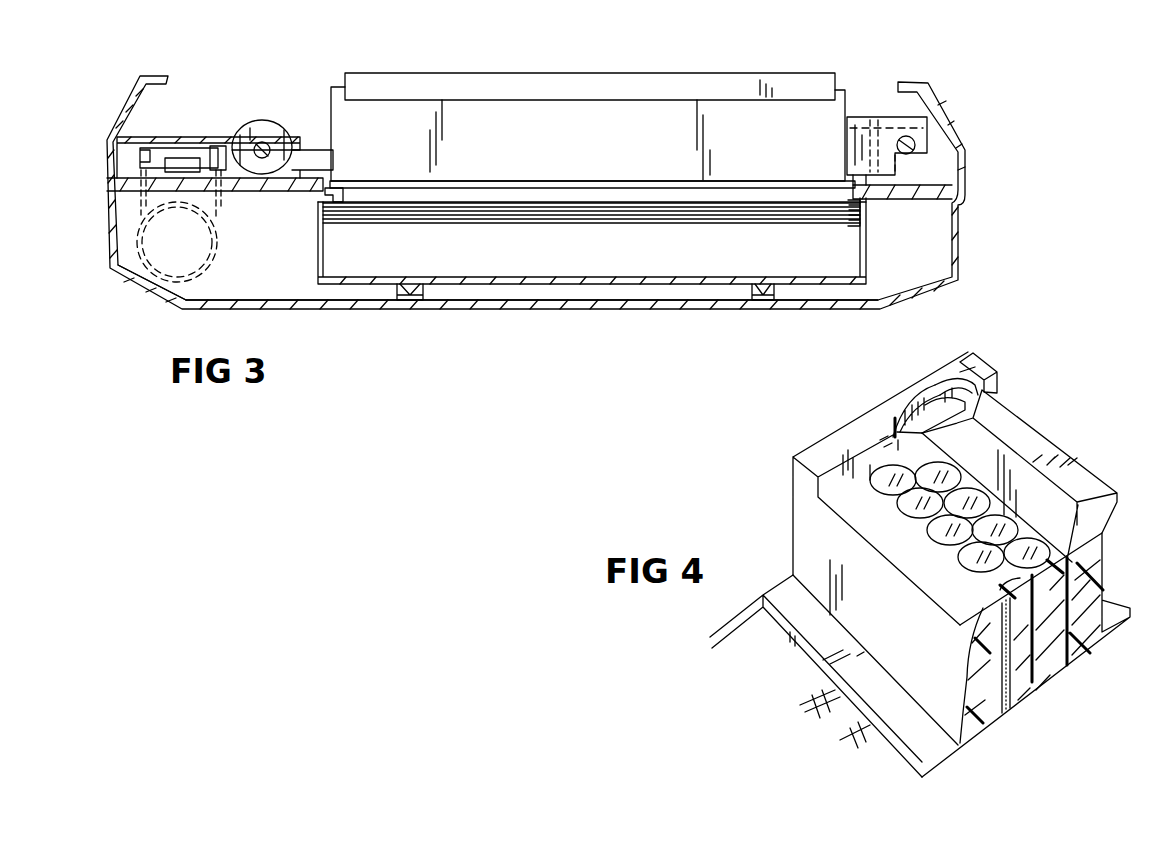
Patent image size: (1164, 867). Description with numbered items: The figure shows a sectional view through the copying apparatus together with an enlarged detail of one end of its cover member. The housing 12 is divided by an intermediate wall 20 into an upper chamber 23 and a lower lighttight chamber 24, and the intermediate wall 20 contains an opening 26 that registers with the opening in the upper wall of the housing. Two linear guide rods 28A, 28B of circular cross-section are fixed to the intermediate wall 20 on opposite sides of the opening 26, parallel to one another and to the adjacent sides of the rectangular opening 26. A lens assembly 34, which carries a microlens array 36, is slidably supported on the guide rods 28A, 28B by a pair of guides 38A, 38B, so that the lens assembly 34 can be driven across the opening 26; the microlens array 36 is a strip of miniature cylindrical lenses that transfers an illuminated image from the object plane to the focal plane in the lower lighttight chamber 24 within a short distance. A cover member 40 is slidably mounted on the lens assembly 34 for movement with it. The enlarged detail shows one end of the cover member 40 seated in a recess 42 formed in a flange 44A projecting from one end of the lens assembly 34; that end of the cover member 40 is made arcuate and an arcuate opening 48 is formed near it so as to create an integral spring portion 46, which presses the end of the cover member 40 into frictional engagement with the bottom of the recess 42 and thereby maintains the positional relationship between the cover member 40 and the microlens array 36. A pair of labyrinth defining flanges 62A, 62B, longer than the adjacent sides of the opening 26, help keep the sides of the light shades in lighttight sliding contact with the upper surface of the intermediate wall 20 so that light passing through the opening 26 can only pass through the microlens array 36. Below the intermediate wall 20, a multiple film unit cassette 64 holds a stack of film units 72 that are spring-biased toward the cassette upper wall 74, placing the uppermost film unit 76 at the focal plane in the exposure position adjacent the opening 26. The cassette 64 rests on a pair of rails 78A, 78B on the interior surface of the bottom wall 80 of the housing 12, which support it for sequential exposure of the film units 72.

In FIG. 3, the housing 12 is at (122, 118).
In FIG. 3, the intermediate wall 20 is at (147, 200).
In FIG. 3, the upper chamber 23 is at (200, 112).
In FIG. 3, the lower lighttight chamber 24 is at (252, 286).
In FIG. 3, the opening 26 is at (705, 195).
In FIG. 3, the linear guide rod 28A is at (255, 130).
In FIG. 3, the linear guide rod 28B is at (916, 145).
In FIG. 3, the lens assembly 34 is at (635, 115).
In FIG. 4, the lens assembly 34 is at (793, 545).
In FIG. 4, the microlens array 36 is at (1062, 565).
In FIG. 3, the guide 38A is at (268, 122).
In FIG. 3, the guide 38B is at (883, 117).
In FIG. 3, the cover member 40 is at (712, 85).
In FIG. 4, the cover member 40 is at (1007, 418).
In FIG. 4, the recess 42 is at (870, 440).
In FIG. 4, the flange 44A is at (975, 367).
In FIG. 4, the integral spring portion 46 is at (967, 385).
In FIG. 4, the arcuate opening 48 is at (912, 400).
In FIG. 3, the labyrinth defining flange 62A is at (312, 165).
In FIG. 3, the labyrinth defining flange 62B is at (864, 175).
In FIG. 3, the multiple film unit cassette 64 is at (320, 240).
In FIG. 3, the film units 72 is at (622, 190).
In FIG. 3, the upper wall 74 is at (320, 208).
In FIG. 3, the uppermost film unit 76 is at (468, 200).
In FIG. 3, the rail 78A is at (405, 300).
In FIG. 3, the rail 78B is at (762, 302).
In FIG. 3, the bottom wall 80 is at (555, 309).